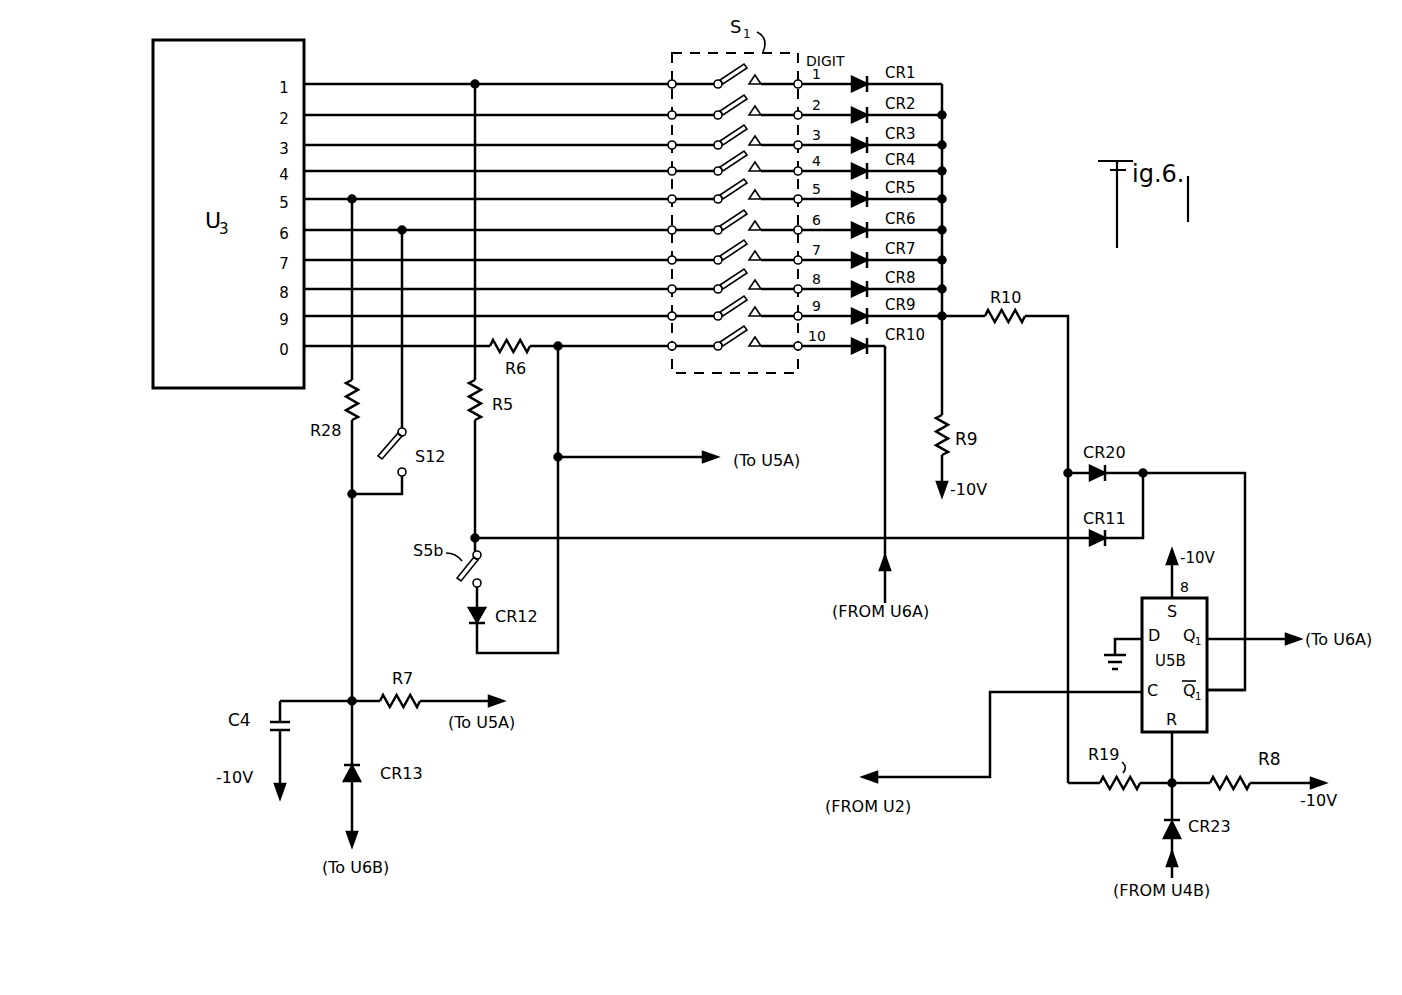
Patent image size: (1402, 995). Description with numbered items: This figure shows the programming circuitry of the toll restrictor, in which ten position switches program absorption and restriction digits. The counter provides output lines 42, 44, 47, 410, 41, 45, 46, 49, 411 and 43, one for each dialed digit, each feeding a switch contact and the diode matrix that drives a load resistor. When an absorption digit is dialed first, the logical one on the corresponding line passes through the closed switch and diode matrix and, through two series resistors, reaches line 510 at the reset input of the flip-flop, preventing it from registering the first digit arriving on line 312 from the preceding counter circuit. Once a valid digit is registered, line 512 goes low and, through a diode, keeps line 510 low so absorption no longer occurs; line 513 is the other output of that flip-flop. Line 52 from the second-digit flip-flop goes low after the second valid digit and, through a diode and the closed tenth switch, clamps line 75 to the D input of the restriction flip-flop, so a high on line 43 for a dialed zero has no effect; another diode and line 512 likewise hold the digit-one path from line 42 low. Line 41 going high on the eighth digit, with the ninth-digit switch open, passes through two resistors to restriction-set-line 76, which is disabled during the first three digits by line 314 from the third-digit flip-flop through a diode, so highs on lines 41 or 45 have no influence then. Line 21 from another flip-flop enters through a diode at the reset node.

The line 42 is at (341, 85).
The line 44 is at (341, 116).
The line 47 is at (341, 146).
The line 410 is at (346, 172).
The line 41 is at (339, 200).
The line 45 is at (341, 231).
The line 46 is at (341, 261).
The line 49 is at (341, 290).
The line 411 is at (343, 317).
The line 43 is at (341, 347).
The line 75 is at (644, 455).
The line 52 is at (889, 554).
The restriction-set-line 76 is at (426, 687).
The line 314 is at (355, 819).
The line 312 is at (1002, 719).
The line 510 is at (1175, 761).
The line 512 is at (1240, 695).
The line 513 is at (1263, 632).
The line 21 is at (1168, 848).